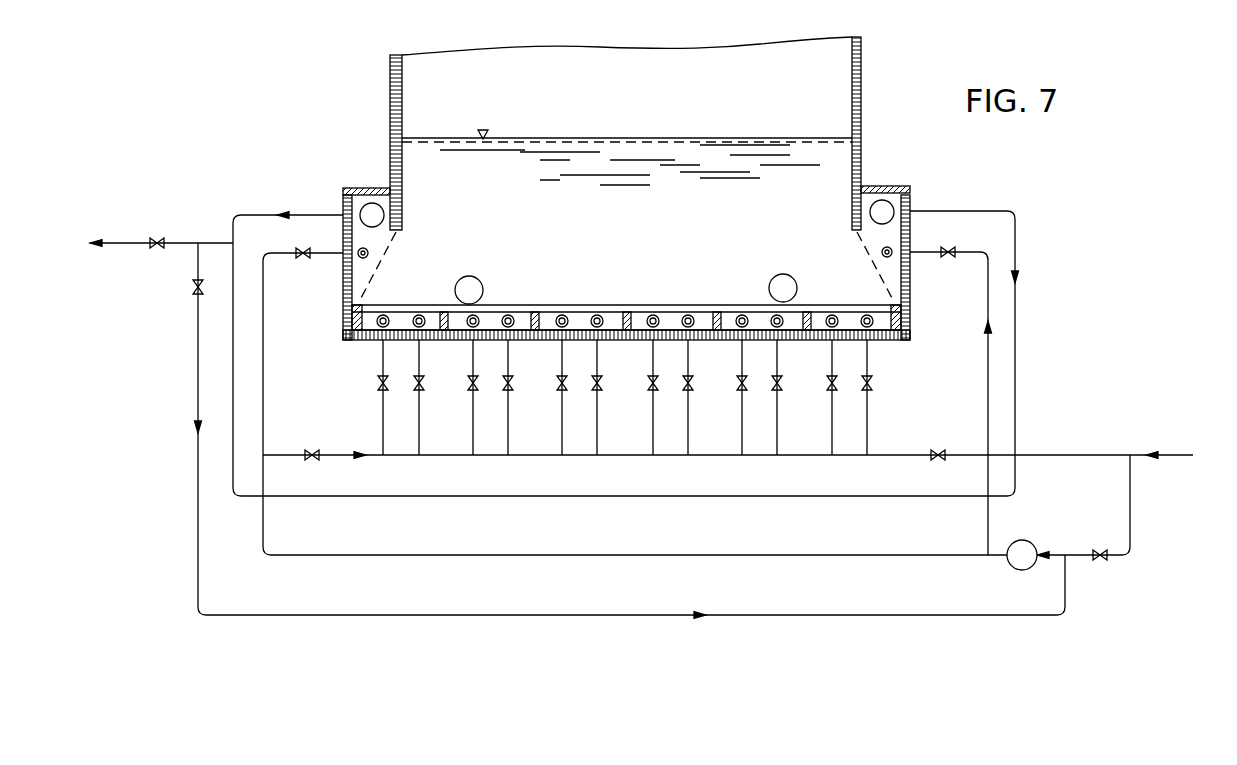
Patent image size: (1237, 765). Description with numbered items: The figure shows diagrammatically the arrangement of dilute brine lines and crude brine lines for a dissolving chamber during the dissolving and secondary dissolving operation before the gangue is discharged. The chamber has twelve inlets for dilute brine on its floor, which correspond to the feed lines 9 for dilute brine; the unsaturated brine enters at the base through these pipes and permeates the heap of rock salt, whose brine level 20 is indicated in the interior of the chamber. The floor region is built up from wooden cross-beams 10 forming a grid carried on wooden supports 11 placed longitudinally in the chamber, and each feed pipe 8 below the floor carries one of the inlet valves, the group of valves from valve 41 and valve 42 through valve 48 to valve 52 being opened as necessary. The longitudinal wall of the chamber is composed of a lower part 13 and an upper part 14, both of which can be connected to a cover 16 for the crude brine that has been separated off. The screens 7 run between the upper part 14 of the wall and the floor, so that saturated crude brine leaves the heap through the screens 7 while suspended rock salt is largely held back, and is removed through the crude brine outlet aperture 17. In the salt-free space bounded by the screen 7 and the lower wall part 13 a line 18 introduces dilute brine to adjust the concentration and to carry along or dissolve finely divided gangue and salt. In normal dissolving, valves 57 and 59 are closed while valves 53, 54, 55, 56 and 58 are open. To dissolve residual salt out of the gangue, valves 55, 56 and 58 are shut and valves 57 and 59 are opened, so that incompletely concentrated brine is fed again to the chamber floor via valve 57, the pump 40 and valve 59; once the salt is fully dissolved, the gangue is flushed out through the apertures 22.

The screen 7 is at (387, 243).
The feed pipe 8 is at (626, 340).
The feed line for dilute brine 9 is at (562, 315).
The cross-beam 10 is at (614, 305).
The wooden support 11 is at (539, 305).
The lower part of the longitudinal wall 13 is at (343, 310).
The upper part of the longitudinal wall 14 is at (390, 74).
The cover 16 is at (374, 188).
The aperture for removing the saturated crude brine 17 is at (384, 213).
The line for the introduction of dilute brine 18 is at (368, 253).
The level of the brine 20 is at (586, 138).
The aperture 22 is at (472, 282).
The pump 40 is at (1014, 566).
The valve 41 is at (378, 383).
The valve 42 is at (424, 383).
The valve 48 is at (692, 383).
The valve 52 is at (871, 383).
The valve 53 is at (303, 260).
The valve 54 is at (946, 260).
The valve 55 is at (939, 449).
The valve 56 is at (1099, 561).
The valve 57 is at (193, 290).
The valve 58 is at (159, 238).
The valve 59 is at (313, 449).